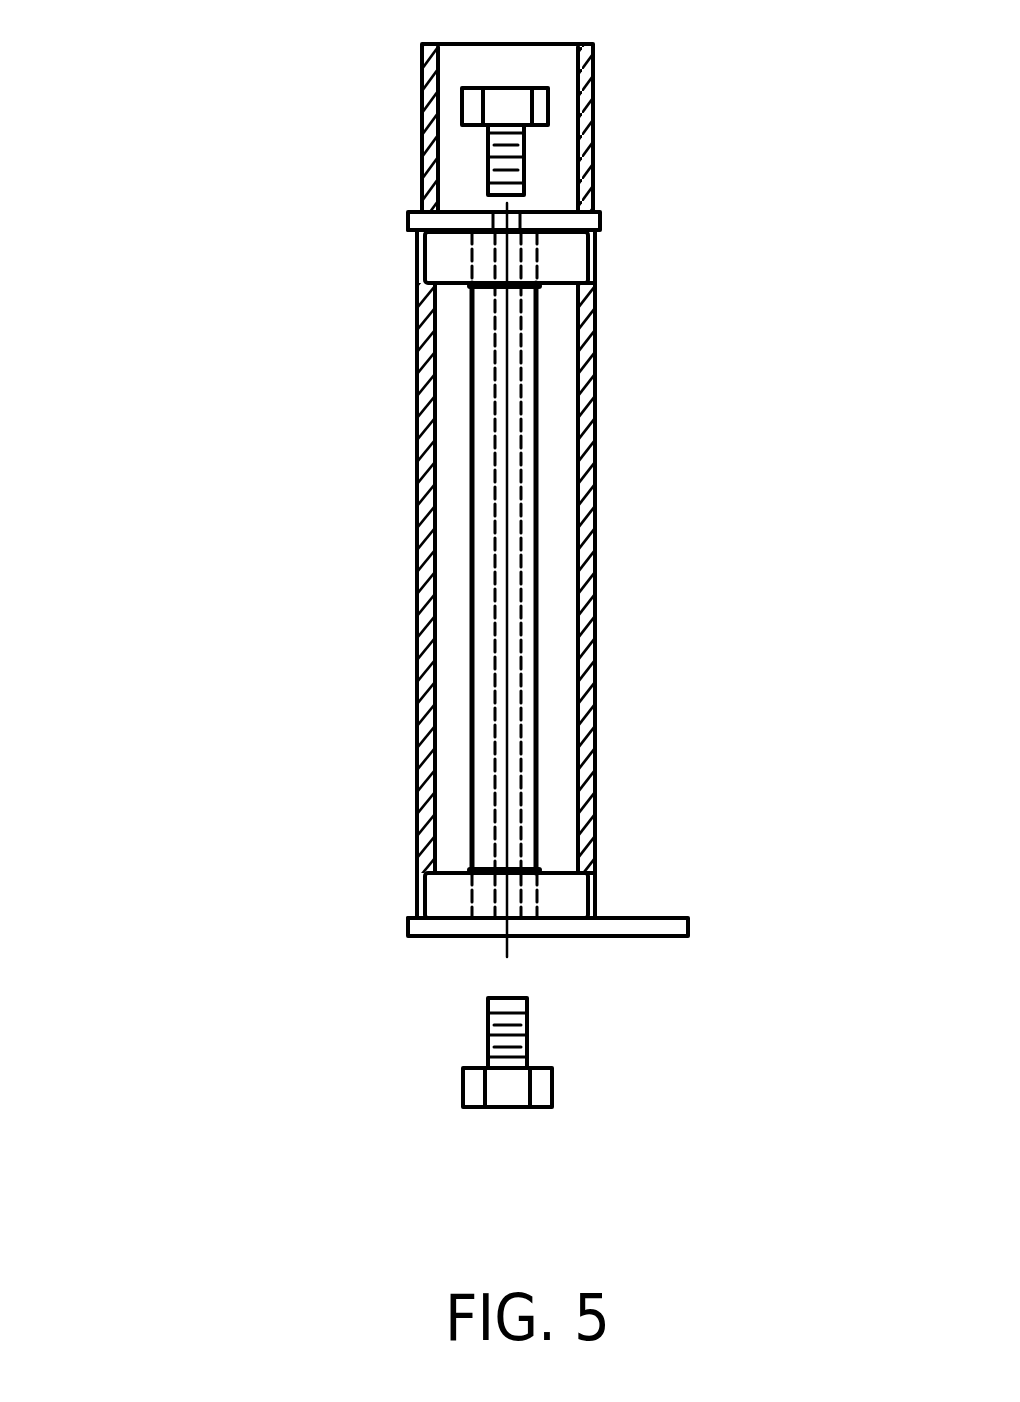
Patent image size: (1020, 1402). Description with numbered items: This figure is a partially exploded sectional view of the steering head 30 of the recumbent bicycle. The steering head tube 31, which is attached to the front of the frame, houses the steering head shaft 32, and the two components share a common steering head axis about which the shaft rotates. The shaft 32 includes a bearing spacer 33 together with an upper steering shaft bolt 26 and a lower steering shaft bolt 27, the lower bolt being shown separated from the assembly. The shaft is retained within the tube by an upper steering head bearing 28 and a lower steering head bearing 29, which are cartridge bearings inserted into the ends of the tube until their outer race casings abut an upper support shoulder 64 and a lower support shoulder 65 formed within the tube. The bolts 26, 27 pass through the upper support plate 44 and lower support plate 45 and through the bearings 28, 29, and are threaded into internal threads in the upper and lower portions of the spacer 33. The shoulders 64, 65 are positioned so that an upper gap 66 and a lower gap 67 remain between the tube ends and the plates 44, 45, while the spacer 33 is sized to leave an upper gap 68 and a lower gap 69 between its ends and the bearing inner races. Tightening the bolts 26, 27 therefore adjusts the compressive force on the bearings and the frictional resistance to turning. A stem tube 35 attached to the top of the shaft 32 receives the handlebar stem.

The upper steering shaft bolt 26 is at (505, 104).
The lower steering shaft bolt 27 is at (513, 1092).
The upper steering head bearing 28 is at (560, 262).
The lower steering head bearing 29 is at (555, 897).
The steering head 30 is at (213, 387).
The steering head tube 31 is at (595, 488).
The steering head shaft 32 is at (573, 657).
The bearing spacer 33 is at (525, 545).
The stem tube 35 is at (588, 143).
The upper support plate 44 is at (597, 218).
The lower support plate 45 is at (457, 925).
The upper support shoulder 64 is at (593, 288).
The lower support shoulder 65 is at (540, 866).
The upper gap 66 is at (417, 232).
The lower gap 67 is at (415, 917).
The upper gap 68 is at (467, 288).
The lower gap 69 is at (468, 865).